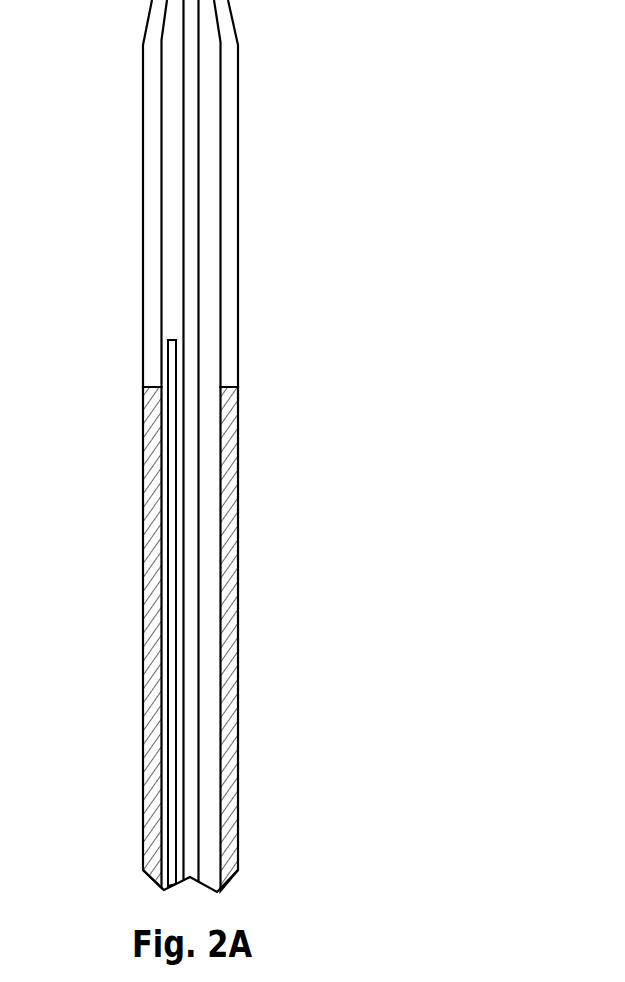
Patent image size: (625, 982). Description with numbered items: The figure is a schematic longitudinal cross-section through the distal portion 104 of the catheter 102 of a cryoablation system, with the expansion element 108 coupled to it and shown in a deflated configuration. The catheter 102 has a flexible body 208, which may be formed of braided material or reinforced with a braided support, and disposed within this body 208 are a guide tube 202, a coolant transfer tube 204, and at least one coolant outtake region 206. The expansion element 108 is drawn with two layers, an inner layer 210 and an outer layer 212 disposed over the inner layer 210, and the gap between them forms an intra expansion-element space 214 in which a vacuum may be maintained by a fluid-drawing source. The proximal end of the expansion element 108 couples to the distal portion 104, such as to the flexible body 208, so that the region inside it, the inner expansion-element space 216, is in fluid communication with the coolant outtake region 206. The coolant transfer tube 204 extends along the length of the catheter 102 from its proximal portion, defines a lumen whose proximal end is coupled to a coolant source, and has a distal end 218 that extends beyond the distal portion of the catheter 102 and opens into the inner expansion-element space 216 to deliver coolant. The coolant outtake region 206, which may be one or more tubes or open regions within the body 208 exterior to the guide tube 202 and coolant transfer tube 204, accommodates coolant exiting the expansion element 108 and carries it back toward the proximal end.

The catheter 102 is at (204, 586).
The distal portion 104 is at (230, 401).
The expansion element 108 is at (209, 194).
The guide tube 202 is at (187, 593).
The coolant transfer tube 204 is at (172, 552).
The coolant outtake region 206 is at (210, 674).
The flexible body 208 is at (142, 515).
The inner layer 210 is at (215, 348).
The outer layer 212 is at (240, 288).
The intra expansion-element space 214 is at (150, 247).
The inner expansion-element space 216 is at (172, 173).
The distal end 218 is at (163, 352).